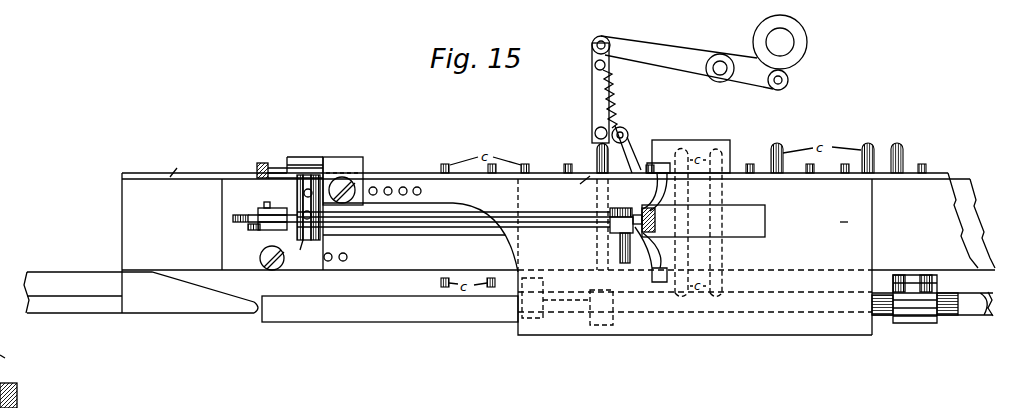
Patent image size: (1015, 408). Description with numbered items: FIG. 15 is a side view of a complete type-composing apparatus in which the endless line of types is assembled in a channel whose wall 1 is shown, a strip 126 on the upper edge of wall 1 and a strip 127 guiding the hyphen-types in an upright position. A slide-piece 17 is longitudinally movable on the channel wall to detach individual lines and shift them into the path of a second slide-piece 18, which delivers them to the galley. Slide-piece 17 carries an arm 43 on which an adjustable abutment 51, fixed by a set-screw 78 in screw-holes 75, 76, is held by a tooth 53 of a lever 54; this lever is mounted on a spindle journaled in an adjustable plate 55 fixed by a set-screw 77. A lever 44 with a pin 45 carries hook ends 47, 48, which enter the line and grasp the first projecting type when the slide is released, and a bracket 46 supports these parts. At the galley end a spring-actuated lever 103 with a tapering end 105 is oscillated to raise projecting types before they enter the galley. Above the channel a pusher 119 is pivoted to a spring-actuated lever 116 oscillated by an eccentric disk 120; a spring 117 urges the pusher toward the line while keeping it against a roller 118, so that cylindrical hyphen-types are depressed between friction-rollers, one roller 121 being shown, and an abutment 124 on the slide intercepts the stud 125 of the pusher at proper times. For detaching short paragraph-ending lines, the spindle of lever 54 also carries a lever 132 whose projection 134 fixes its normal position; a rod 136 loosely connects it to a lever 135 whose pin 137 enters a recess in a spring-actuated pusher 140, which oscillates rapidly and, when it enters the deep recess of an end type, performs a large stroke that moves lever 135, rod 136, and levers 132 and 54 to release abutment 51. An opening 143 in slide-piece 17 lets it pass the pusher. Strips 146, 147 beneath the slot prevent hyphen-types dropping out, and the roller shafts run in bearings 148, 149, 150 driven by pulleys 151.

The channel wall 1 is at (558, 246).
The slide-piece 17 is at (831, 223).
The slide-piece 18 is at (25, 386).
The arm 43 is at (400, 193).
The lever 44 is at (430, 231).
The pin 45 is at (303, 238).
The bracket 46 is at (300, 204).
The hook end 47 is at (657, 187).
The hook end 48 is at (653, 254).
The adjustable abutment 51 is at (346, 160).
The tooth 53 is at (305, 160).
The lever 54 is at (290, 172).
The adjustable plate 55 is at (250, 196).
The screw-hole 75 is at (345, 256).
The screw-hole 76 is at (404, 186).
The set-screw 77 is at (307, 223).
The set-screw 78 is at (374, 186).
The spring-actuated lever 103 is at (73, 292).
The tapering end 105 is at (190, 292).
The spring-actuated lever 116 is at (690, 63).
The spring 117 is at (613, 96).
The roller 118 is at (626, 129).
The pusher 119 is at (593, 92).
The eccentric disk 120 is at (803, 49).
The friction-roller 121 is at (601, 307).
The abutment 124 is at (668, 146).
The stud 125 is at (594, 135).
The strip 126 is at (380, 175).
The strip 127 is at (13, 361).
The lever 132 is at (262, 240).
The projection 134 is at (260, 227).
The lever 135 is at (613, 231).
The rod 136 is at (548, 233).
The pin 137 is at (619, 198).
The spring-actuated pusher 140 is at (656, 220).
The opening 143 is at (703, 221).
The strip 146 is at (980, 316).
The strip 147 is at (390, 309).
The bearing 148 is at (527, 311).
The bearing 149 is at (885, 316).
The bearing 150 is at (949, 316).
The pulley 151 is at (908, 296).